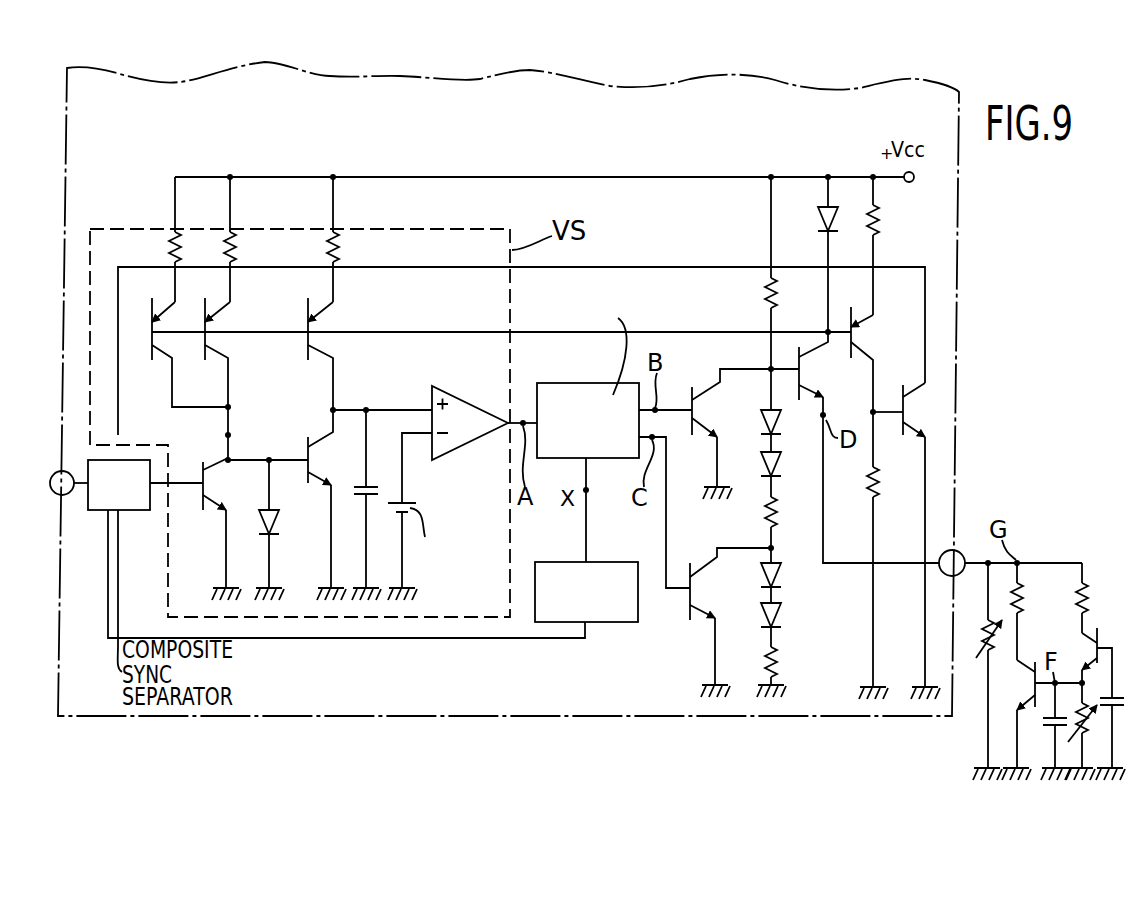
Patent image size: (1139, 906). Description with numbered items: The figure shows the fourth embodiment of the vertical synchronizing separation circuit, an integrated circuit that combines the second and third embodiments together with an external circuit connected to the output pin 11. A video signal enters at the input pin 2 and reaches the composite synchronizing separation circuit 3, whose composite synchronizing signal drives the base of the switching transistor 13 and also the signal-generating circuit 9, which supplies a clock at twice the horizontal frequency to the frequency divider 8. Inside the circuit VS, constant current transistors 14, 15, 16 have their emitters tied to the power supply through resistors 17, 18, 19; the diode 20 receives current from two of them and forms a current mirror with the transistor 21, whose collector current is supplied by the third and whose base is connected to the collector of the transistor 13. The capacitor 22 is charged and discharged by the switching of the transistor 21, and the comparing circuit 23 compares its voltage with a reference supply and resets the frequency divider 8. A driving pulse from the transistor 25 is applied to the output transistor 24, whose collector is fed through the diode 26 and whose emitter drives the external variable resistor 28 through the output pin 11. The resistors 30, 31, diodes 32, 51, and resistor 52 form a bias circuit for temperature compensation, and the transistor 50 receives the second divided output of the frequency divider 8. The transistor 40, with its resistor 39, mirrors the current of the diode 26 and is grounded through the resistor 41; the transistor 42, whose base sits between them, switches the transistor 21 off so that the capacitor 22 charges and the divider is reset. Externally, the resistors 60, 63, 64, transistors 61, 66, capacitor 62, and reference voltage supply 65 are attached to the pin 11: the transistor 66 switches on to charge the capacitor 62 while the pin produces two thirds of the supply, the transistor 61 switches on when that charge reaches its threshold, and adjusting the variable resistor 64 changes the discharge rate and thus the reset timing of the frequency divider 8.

The input pin 2 is at (64, 496).
The composite synchronizing separation circuit 3 is at (132, 510).
The frequency divider 8 is at (573, 383).
The signal-generating circuit 9 is at (612, 622).
The output pin 11 is at (963, 552).
The transistor 13 is at (210, 516).
The constant current transistor 14 is at (163, 343).
The constant current transistor 15 is at (213, 342).
The constant current transistor 16 is at (303, 348).
The resistor 17 is at (170, 247).
The resistor 18 is at (238, 247).
The resistor 19 is at (342, 247).
The diode 20 is at (275, 535).
The transistor 21 is at (318, 490).
The capacitor 22 is at (358, 487).
The comparing circuit 23 is at (470, 445).
The output transistor 24 is at (810, 363).
The transistor 25 is at (693, 392).
The diode 26 is at (822, 217).
The variable resistor 28 is at (980, 655).
The resistor 30 is at (765, 292).
The resistor 31 is at (782, 512).
The diode 32 is at (782, 420).
The resistor 39 is at (883, 215).
The transistor 40 is at (866, 320).
The resistor 41 is at (885, 483).
The transistor 42 is at (930, 390).
The transistor 50 is at (688, 596).
The diode 51 is at (782, 575).
The resistor 52 is at (782, 660).
The resistor 60 is at (1022, 595).
The transistor 61 is at (1022, 682).
The capacitor 62 is at (1043, 716).
The resistor 63 is at (1088, 592).
The variable resistor 64 is at (1073, 740).
The reference voltage supply 65 is at (1104, 713).
The transistor 66 is at (1093, 648).